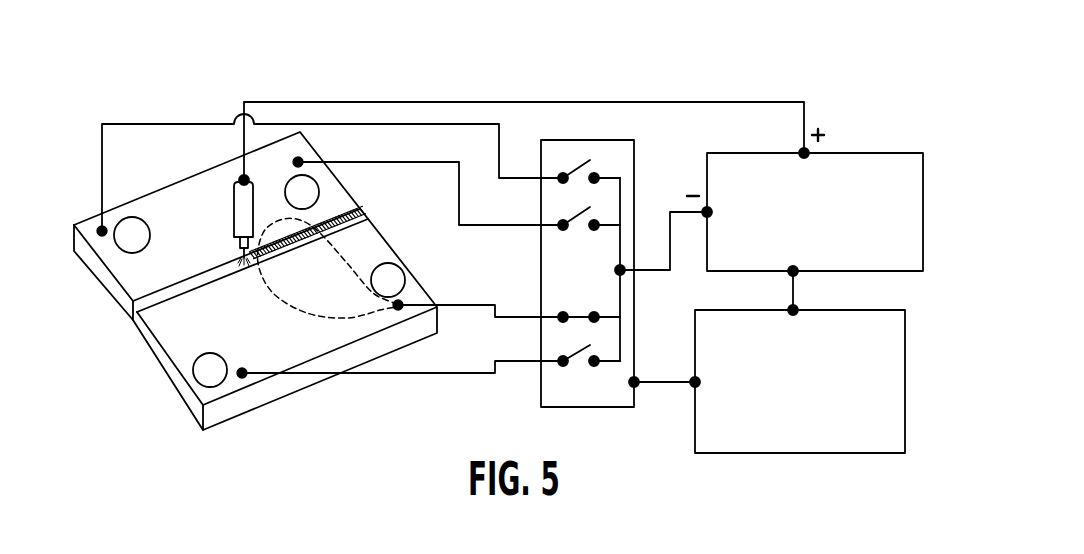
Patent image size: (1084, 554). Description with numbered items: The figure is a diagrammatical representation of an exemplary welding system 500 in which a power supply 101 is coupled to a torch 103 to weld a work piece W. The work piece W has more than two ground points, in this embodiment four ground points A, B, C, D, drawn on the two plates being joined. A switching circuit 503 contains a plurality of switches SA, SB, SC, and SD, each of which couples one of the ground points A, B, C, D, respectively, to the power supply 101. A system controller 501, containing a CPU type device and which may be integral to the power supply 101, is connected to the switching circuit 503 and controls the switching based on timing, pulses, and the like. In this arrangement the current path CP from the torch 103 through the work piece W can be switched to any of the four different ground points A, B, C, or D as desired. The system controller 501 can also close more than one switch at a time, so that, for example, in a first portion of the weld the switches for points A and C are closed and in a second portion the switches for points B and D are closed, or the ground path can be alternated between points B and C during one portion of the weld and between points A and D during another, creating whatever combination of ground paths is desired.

The welding system 500 is at (646, 65).
The power supply 101 is at (848, 153).
The torch 103 is at (241, 212).
The system controller 501 is at (805, 453).
The switching circuit 503 is at (554, 290).
The work piece W is at (102, 290).
The current path CP is at (277, 290).
The ground point A is at (123, 235).
The ground point B is at (302, 183).
The ground point C is at (388, 286).
The ground point D is at (220, 370).
The switch SA is at (590, 163).
The switch SB is at (586, 237).
The switch SC is at (589, 300).
The switch SD is at (589, 372).